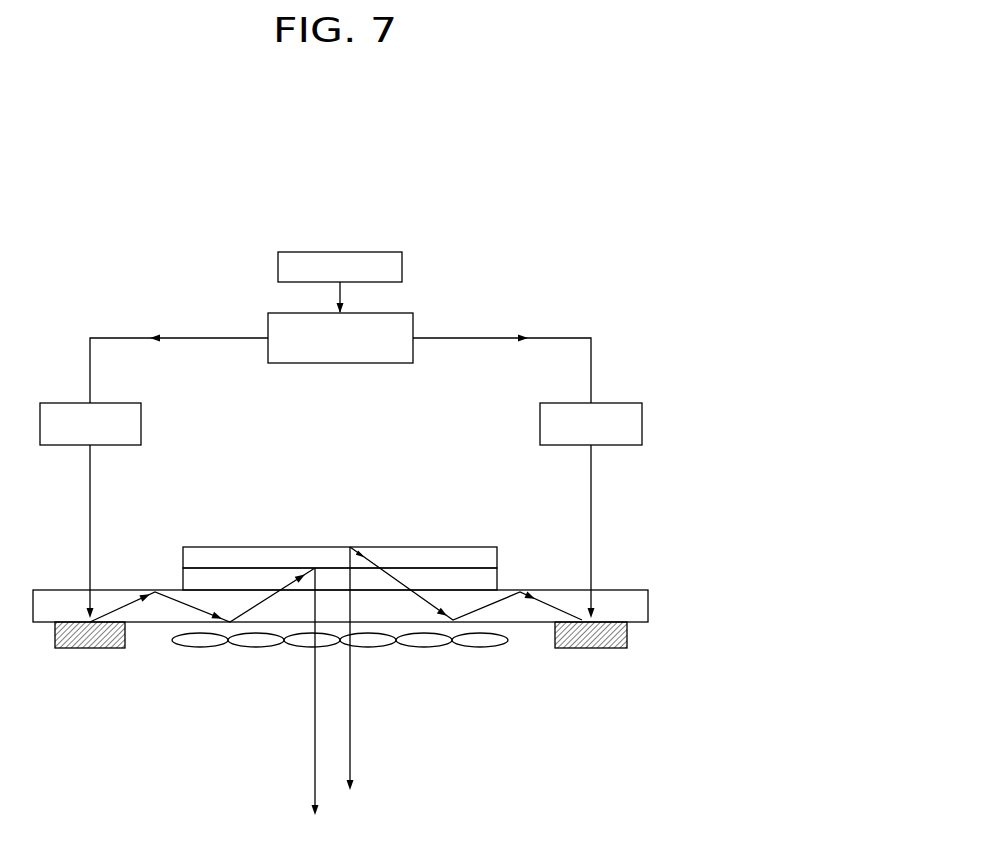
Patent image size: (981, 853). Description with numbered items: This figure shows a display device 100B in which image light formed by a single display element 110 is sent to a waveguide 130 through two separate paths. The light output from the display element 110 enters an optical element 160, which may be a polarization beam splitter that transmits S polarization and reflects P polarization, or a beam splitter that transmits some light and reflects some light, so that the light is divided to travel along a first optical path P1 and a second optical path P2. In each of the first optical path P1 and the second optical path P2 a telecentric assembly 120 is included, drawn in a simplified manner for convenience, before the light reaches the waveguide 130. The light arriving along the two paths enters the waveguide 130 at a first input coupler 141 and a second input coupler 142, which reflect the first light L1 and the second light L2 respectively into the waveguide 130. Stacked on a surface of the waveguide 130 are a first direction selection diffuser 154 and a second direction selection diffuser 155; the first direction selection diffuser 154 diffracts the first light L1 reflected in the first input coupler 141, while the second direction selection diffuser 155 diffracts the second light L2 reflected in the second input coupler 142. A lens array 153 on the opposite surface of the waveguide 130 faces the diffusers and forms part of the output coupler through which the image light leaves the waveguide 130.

The display device 100B is at (573, 208).
The display element 110 is at (364, 252).
The optical element 160 is at (415, 318).
The telecentric assembly 120 is at (62, 402).
The first optical path P1 is at (179, 350).
The second optical path P2 is at (502, 350).
The waveguide 130 is at (648, 607).
The first input coupler 141 is at (80, 650).
The second input coupler 142 is at (605, 650).
The lens array 153 is at (483, 648).
The first direction selection diffuser 154 is at (497, 580).
The second direction selection diffuser 155 is at (497, 561).
The first light L1 is at (122, 590).
The second light L2 is at (397, 575).